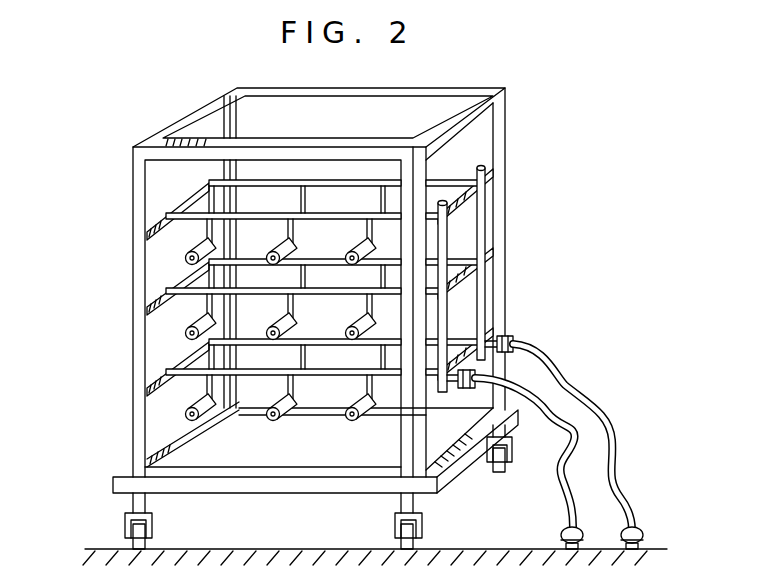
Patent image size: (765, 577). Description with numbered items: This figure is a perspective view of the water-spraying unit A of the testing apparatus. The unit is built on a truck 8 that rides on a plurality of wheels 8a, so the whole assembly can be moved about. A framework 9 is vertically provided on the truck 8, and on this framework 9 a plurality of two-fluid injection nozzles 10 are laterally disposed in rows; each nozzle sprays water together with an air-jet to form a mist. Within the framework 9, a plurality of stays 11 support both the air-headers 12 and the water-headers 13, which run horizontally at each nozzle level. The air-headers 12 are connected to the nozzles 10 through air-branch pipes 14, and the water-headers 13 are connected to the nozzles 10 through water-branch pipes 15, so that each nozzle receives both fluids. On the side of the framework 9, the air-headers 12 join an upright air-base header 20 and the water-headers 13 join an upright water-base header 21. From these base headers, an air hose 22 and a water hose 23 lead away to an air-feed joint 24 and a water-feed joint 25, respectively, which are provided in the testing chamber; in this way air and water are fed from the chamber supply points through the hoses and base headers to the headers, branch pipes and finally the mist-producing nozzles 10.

The water-spraying unit A is at (506, 99).
The truck 8 is at (312, 490).
The wheels 8a is at (147, 545).
The framework 9 is at (507, 129).
The two-fluid injection nozzles 10 is at (183, 262).
The stays 11 is at (490, 170).
The air-headers 12 is at (262, 183).
The water-headers 13 is at (262, 214).
The air-branch pipes 14 is at (211, 200).
The water-branch pipes 15 is at (205, 236).
The air-base header 20 is at (481, 280).
The water-base header 21 is at (444, 316).
The air hose 22 is at (621, 445).
The water hose 23 is at (560, 470).
The air-feed joint 24 is at (644, 533).
The water-feed joint 25 is at (562, 538).